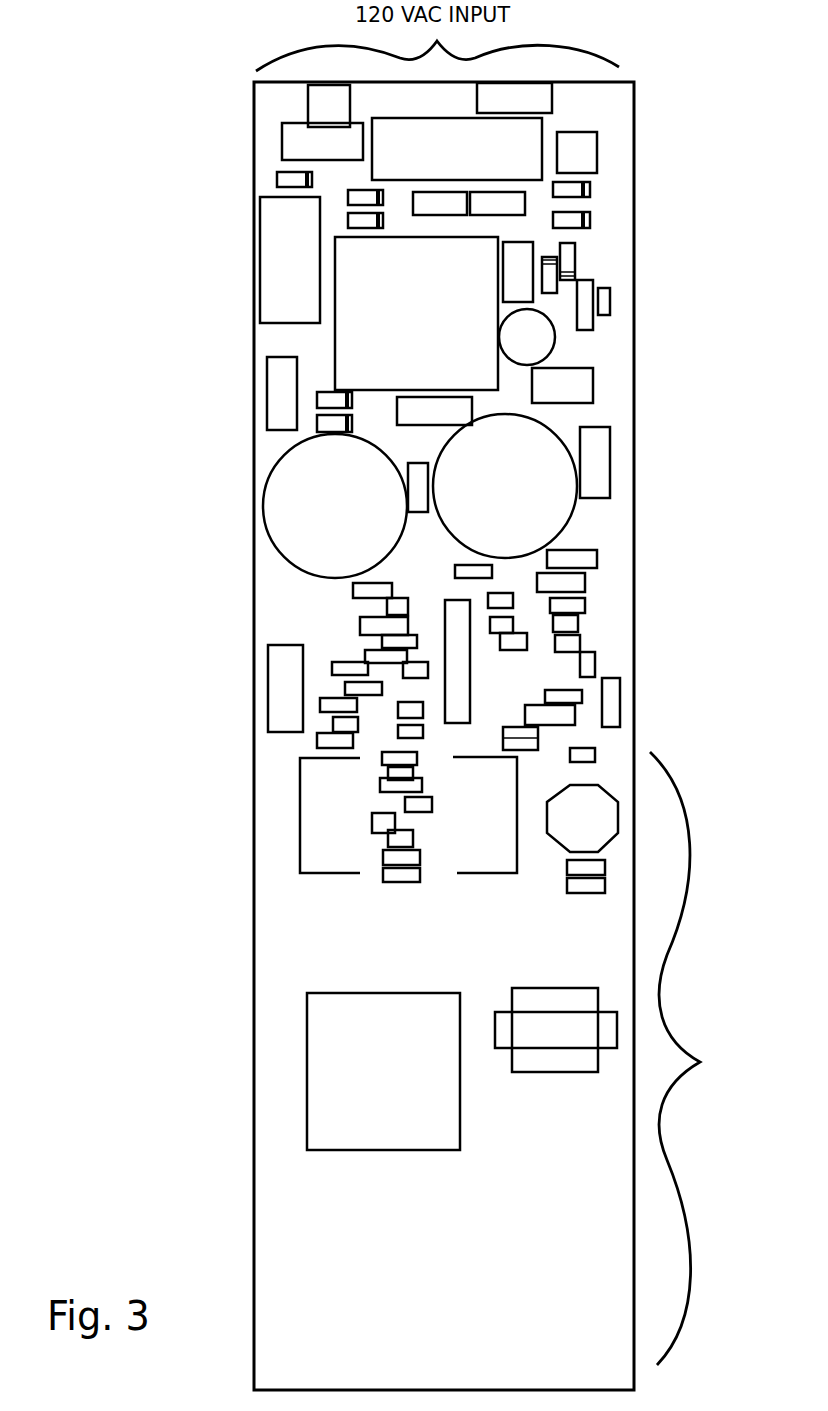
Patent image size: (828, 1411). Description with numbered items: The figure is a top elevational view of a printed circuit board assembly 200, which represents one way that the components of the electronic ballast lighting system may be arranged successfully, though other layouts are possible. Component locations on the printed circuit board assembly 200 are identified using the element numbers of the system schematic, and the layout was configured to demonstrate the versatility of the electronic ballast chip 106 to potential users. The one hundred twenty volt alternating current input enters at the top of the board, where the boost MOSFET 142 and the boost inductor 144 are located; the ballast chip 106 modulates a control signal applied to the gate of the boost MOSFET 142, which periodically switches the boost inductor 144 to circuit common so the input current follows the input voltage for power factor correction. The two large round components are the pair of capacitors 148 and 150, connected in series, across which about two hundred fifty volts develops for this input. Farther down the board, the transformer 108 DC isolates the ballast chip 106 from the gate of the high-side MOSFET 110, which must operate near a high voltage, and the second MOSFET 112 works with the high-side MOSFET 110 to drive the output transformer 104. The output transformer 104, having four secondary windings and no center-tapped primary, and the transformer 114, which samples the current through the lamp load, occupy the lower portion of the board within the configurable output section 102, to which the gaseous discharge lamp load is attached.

The printed circuit board assembly 200 is at (633, 82).
The configurable output section 102 is at (696, 1058).
The output transformer 104 is at (388, 1055).
The electronic ballast chip 106 is at (470, 700).
The transformer 108 is at (596, 835).
The high-side MOSFET 110 is at (517, 823).
The second MOSFET 112 is at (325, 818).
The transformer 114 is at (570, 1043).
The boost MOSFET 142 is at (305, 276).
The boost inductor 144 is at (434, 334).
The capacitor 148 is at (341, 533).
The capacitor 150 is at (513, 517).